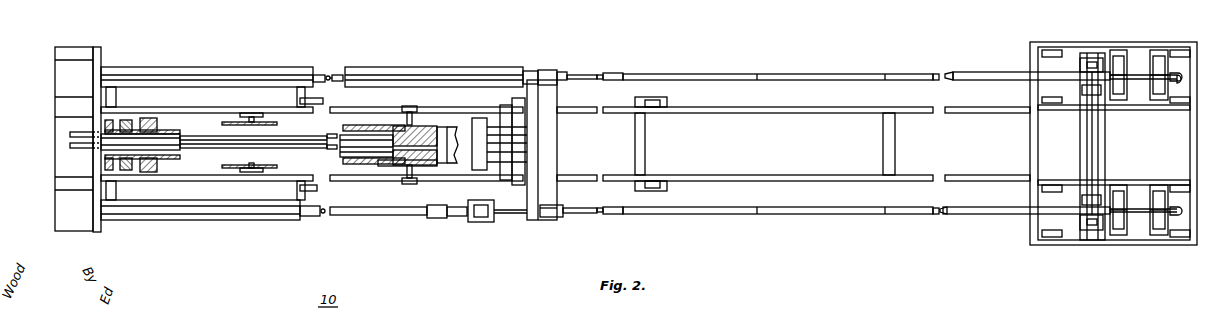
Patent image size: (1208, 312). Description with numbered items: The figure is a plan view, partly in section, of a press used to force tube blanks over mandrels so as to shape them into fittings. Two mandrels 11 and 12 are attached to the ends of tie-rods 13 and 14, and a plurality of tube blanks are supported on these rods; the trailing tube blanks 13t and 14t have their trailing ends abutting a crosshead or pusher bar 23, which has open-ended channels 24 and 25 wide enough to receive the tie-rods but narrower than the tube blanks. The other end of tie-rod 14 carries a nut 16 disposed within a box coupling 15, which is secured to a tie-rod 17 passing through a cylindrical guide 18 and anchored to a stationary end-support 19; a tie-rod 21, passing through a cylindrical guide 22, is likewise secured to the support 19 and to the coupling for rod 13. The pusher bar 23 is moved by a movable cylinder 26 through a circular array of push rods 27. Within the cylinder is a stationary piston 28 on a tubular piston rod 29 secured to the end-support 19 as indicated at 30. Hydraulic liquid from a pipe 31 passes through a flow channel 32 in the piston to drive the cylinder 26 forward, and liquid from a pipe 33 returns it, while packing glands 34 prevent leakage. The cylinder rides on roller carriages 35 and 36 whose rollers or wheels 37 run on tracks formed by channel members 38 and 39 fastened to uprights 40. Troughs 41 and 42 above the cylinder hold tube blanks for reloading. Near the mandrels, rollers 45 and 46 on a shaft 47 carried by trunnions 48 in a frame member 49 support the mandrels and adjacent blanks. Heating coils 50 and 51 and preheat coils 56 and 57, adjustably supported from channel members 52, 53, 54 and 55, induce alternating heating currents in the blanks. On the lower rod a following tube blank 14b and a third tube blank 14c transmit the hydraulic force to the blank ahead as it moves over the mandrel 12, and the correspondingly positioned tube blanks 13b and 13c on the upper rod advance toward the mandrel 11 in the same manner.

The mandrel 11 is at (1176, 74).
The mandrel 12 is at (1176, 216).
The tie-rod 13 is at (578, 74).
The trailing tube blank 13t is at (565, 72).
The upper rod thick section 13c is at (992, 74).
The upper rod shaft end 13b is at (1130, 76).
The tie-rod 14 is at (574, 214).
The trailing tube blank 14t is at (550, 218).
The third tube blank 14c is at (972, 214).
The following tube blank 14b is at (1025, 214).
The box coupling 15 is at (476, 222).
The nut 16 is at (480, 206).
The tie-rod 17 is at (310, 216).
The cylindrical guide 18 is at (362, 215).
The stationary end-support 19 is at (78, 50).
The tie-rod 21 is at (322, 74).
The cylindrical guide 22 is at (337, 74).
The crosshead or pusher bar 23 is at (535, 130).
The open-ended channel 24 is at (530, 80).
The open-ended channel 25 is at (530, 215).
The movable cylinder 26 is at (170, 130).
The push rods 27 is at (510, 132).
The stationary piston 28 is at (425, 166).
The tubular piston rod 29 is at (378, 158).
The securing point of piston rod 30 is at (108, 164).
The pipe 31 is at (85, 146).
The flow channel 32 is at (442, 140).
The pipe 33 is at (75, 134).
The packing glands 34 is at (140, 170).
The roller carriage 35 is at (222, 123).
The roller carriage 36 is at (375, 130).
The rollers or wheels 37 is at (252, 116).
The channel member 38 is at (232, 108).
The channel member 39 is at (202, 181).
The uprights 40 is at (312, 100).
The trough 41 is at (172, 74).
The trough 42 is at (202, 216).
The roller 45 is at (1086, 63).
The roller 46 is at (1086, 232).
The shaft 47 is at (1092, 164).
The trunnions 48 is at (1082, 90).
The frame member 49 is at (1101, 141).
The heating coil 50 is at (1160, 101).
The heating coil 51 is at (1152, 236).
The channel member 52 is at (1048, 242).
The channel member 53 is at (1048, 185).
The channel member 54 is at (1052, 104).
The channel member 55 is at (1052, 48).
The preheat coil 56 is at (1119, 101).
The preheat coil 57 is at (1115, 236).